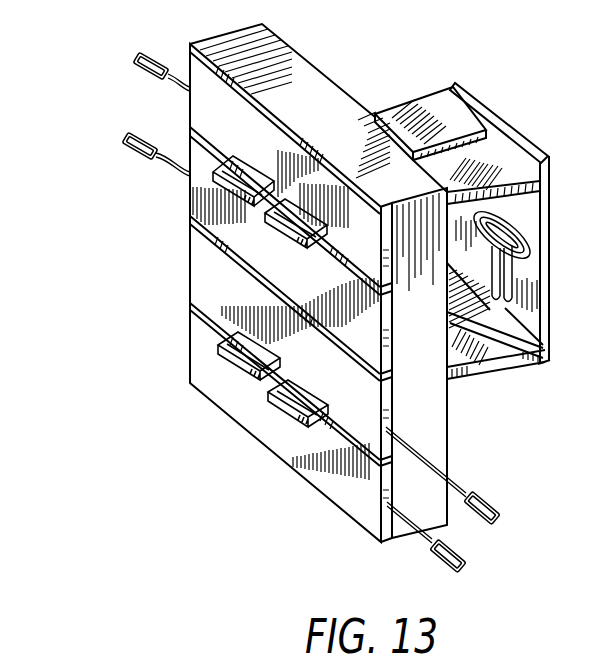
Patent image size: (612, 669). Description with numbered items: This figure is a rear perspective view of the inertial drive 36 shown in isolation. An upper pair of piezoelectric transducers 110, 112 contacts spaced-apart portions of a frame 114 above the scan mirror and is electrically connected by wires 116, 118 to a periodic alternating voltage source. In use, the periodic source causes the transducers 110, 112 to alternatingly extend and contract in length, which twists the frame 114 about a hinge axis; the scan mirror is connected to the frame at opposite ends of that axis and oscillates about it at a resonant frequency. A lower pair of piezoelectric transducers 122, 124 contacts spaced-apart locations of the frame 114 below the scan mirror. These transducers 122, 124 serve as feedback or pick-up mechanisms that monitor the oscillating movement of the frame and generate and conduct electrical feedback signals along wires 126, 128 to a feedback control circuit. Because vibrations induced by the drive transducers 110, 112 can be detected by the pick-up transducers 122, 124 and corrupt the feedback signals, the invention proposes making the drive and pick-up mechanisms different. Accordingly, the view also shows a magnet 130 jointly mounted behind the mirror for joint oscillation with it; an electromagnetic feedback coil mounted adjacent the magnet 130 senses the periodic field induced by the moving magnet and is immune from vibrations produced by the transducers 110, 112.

The inertial drive 36 is at (505, 54).
The piezoelectric transducer 110 is at (503, 158).
The piezoelectric transducer 112 is at (434, 114).
The frame 114 is at (527, 222).
The wire 116 is at (156, 58).
The wire 118 is at (130, 132).
The piezoelectric transducer 122 is at (513, 306).
The piezoelectric transducer 124 is at (517, 346).
The wire 126 is at (497, 522).
The wire 128 is at (462, 570).
The magnet 130 is at (497, 352).